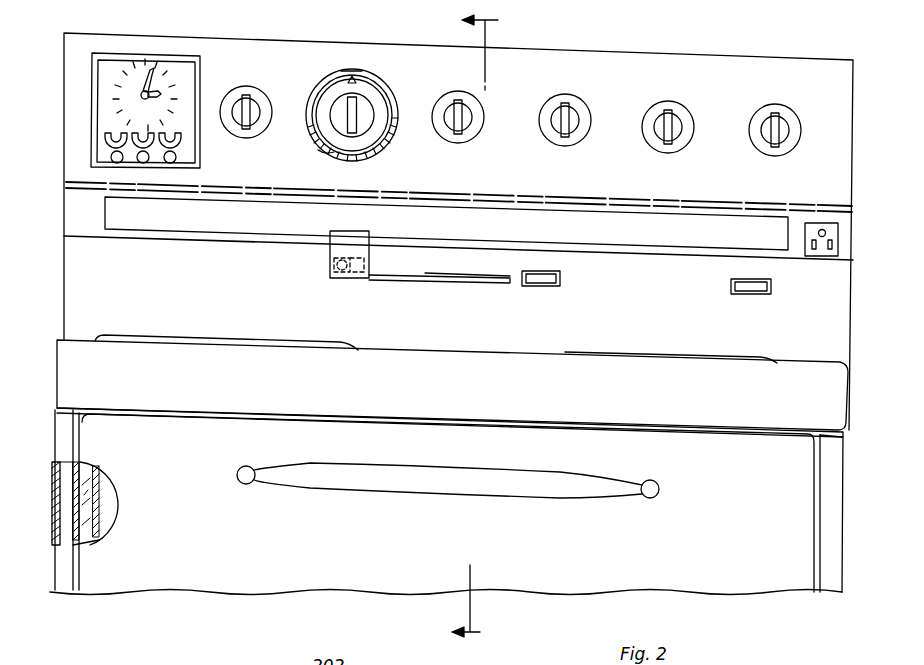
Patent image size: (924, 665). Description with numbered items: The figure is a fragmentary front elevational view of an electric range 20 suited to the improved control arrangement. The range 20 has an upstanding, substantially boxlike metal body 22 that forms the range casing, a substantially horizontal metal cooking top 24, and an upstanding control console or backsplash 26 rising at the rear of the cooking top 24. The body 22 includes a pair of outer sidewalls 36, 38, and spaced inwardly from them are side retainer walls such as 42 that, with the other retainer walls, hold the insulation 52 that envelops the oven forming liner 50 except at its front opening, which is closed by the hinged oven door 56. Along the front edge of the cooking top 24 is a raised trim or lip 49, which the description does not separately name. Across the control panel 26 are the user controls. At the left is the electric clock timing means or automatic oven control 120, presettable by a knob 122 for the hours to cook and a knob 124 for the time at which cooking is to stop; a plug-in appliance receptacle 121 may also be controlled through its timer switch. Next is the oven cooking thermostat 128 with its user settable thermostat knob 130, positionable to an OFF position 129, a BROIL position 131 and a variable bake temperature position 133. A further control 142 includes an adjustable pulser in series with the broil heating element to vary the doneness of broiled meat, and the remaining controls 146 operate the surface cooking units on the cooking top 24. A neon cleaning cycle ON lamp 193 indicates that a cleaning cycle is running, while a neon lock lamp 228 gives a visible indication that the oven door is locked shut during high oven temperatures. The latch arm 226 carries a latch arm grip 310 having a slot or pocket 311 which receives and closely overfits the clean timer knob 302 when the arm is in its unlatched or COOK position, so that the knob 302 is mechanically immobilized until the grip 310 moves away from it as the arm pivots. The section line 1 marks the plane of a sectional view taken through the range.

The section line 1 is at (484, 328).
The electric range 20 is at (806, 58).
The metal body 22 is at (762, 400).
The cooking top 24 is at (470, 350).
The control console or backsplash 26 is at (604, 64).
The outer sidewall 36 is at (48, 527).
The outer sidewall 38 is at (845, 556).
The side retainer wall 42 is at (76, 500).
The lip 49 is at (183, 340).
The oven forming liner 50 is at (99, 478).
The insulation 52 is at (88, 526).
The oven door 56 is at (272, 565).
The electric clock timing means or automatic oven control 120 is at (168, 54).
The plug-in appliance receptacle 121 is at (822, 257).
The knob 122 is at (143, 163).
The knob 124 is at (177, 158).
The oven cooking thermostat 128 is at (378, 72).
The OFF position 129 is at (352, 70).
The thermostat knob 130 is at (355, 125).
The BROIL position 131 is at (386, 86).
The variable bake temperature position 133 is at (333, 151).
The control 142 is at (243, 86).
The controls 146 is at (485, 119).
The neon cleaning cycle ON lamp 193 is at (546, 282).
The latch arm 226 is at (398, 278).
The neon lock lamp 228 is at (745, 288).
The clean timer knob 302 is at (330, 258).
The latch arm grip 310 is at (355, 237).
The slot or pocket 311 is at (340, 271).